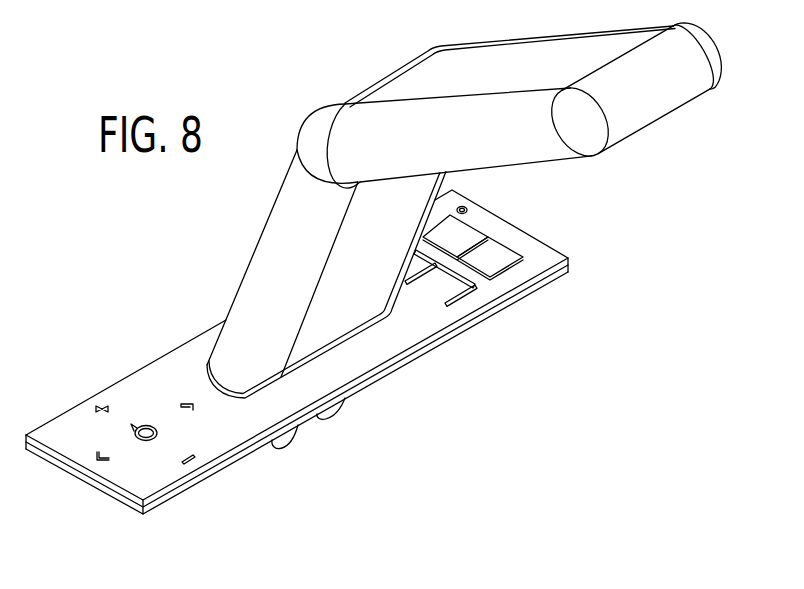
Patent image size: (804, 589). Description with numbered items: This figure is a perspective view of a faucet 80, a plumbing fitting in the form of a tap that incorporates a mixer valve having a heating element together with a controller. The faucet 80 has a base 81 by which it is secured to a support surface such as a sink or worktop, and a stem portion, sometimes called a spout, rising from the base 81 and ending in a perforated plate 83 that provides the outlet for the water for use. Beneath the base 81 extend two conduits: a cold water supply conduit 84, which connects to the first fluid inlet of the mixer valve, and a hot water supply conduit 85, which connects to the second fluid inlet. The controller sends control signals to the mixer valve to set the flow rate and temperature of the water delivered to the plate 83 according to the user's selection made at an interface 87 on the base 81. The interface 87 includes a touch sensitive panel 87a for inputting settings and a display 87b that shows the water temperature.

The faucet 80 is at (303, 75).
The base 81 is at (160, 370).
The perforated plate 83 is at (627, 155).
The cold water supply conduit 84 is at (289, 446).
The hot water supply conduit 85 is at (339, 417).
The interface 87 is at (420, 315).
The touch sensitive panel 87a is at (138, 475).
The display 87b is at (507, 232).